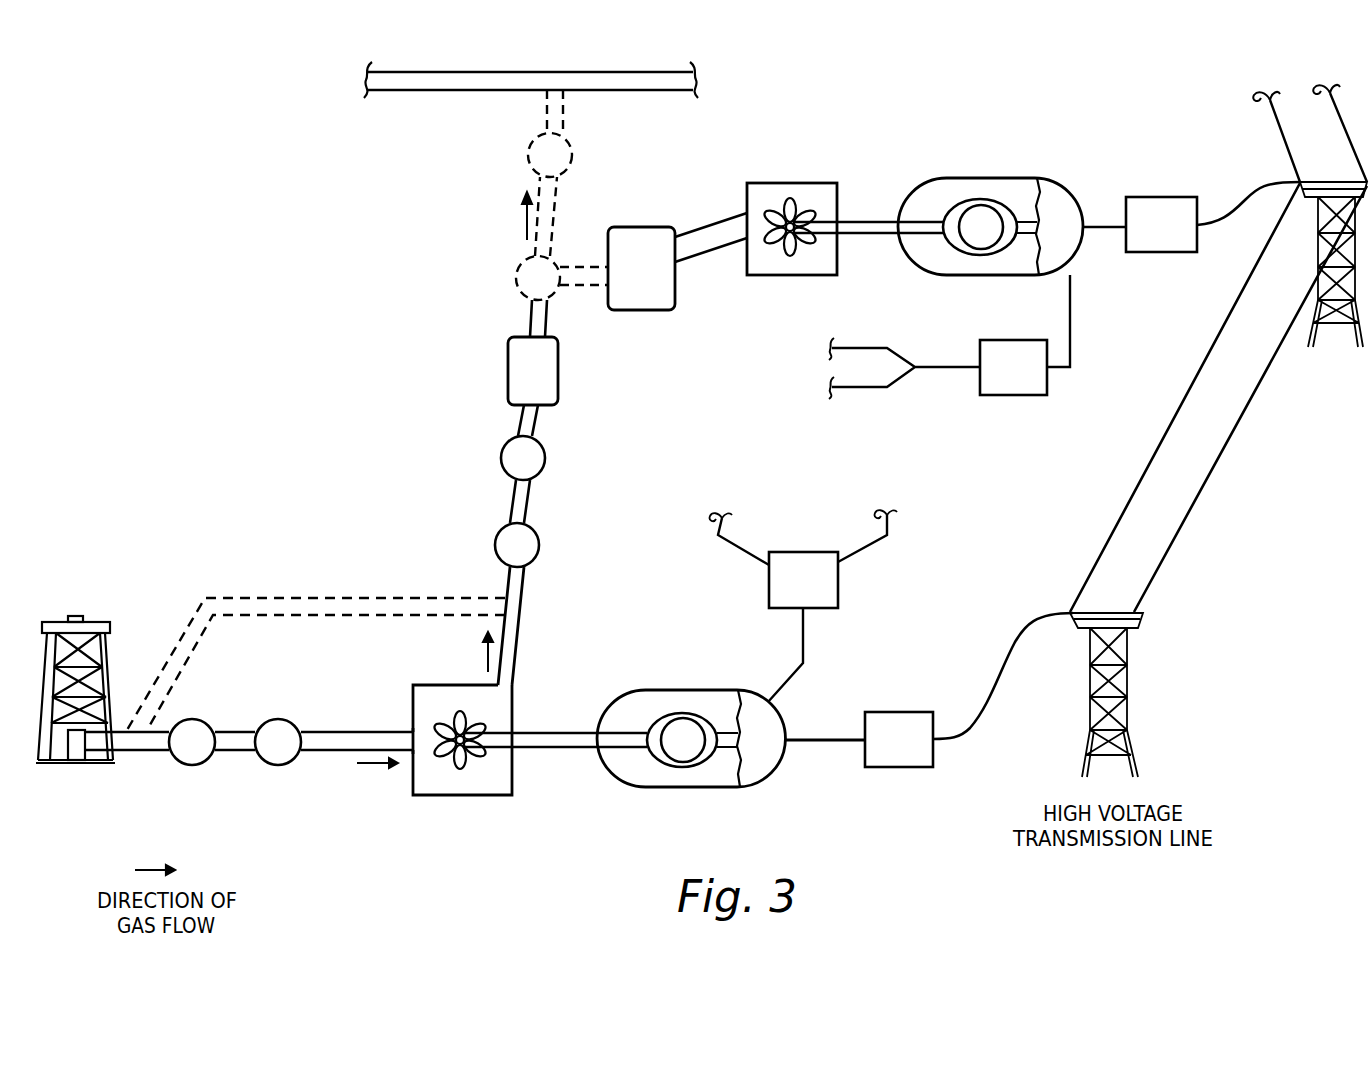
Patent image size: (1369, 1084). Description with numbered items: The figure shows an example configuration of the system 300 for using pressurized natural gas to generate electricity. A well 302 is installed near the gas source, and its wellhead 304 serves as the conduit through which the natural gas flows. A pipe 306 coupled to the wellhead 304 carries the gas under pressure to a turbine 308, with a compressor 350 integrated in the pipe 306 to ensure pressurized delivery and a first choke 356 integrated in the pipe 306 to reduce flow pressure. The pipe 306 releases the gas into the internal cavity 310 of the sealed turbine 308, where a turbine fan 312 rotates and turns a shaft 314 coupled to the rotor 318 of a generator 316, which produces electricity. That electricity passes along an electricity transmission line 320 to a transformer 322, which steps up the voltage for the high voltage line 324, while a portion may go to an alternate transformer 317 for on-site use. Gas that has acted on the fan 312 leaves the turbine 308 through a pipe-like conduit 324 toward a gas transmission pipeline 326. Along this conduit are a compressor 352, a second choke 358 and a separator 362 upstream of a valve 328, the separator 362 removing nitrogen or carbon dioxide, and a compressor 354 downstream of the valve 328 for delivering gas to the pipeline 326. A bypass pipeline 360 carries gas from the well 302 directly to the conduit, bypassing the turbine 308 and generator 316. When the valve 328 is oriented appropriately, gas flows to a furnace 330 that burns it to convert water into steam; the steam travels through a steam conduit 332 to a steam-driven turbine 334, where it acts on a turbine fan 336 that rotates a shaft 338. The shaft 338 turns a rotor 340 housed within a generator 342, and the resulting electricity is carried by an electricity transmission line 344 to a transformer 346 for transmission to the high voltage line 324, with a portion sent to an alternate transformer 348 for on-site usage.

The system 300 is at (207, 243).
The well 302 is at (107, 670).
The wellhead 304 is at (78, 752).
The pipe 306 is at (333, 752).
The turbine 308 is at (445, 685).
The internal cavity 310 is at (411, 738).
The turbine fan 312 is at (470, 770).
The shaft 314 is at (558, 750).
The generator 316 is at (660, 690).
The alternate transformer 317 is at (769, 588).
The rotor 318 is at (682, 768).
The electricity transmission line 320 is at (833, 744).
The transformer 322 is at (898, 712).
The high voltage line 324 is at (521, 636).
The gas transmission pipeline 326 is at (447, 90).
The valve 328 is at (518, 282).
The furnace 330 is at (650, 310).
The steam conduit 332 is at (716, 230).
The turbine 334 is at (770, 183).
The turbine fan 336 is at (787, 260).
The shaft 338 is at (862, 215).
The rotor 340 is at (980, 255).
The generator 342 is at (995, 178).
The electricity transmission line 344 is at (1105, 230).
The transformer 346 is at (1160, 197).
The alternate transformer 348 is at (1012, 395).
The compressor 350 is at (208, 722).
The compressor 352 is at (495, 538).
The compressor 354 is at (528, 147).
The first choke 356 is at (270, 765).
The second choke 358 is at (545, 465).
The bypass pipeline 360 is at (286, 597).
The separator 362 is at (508, 368).